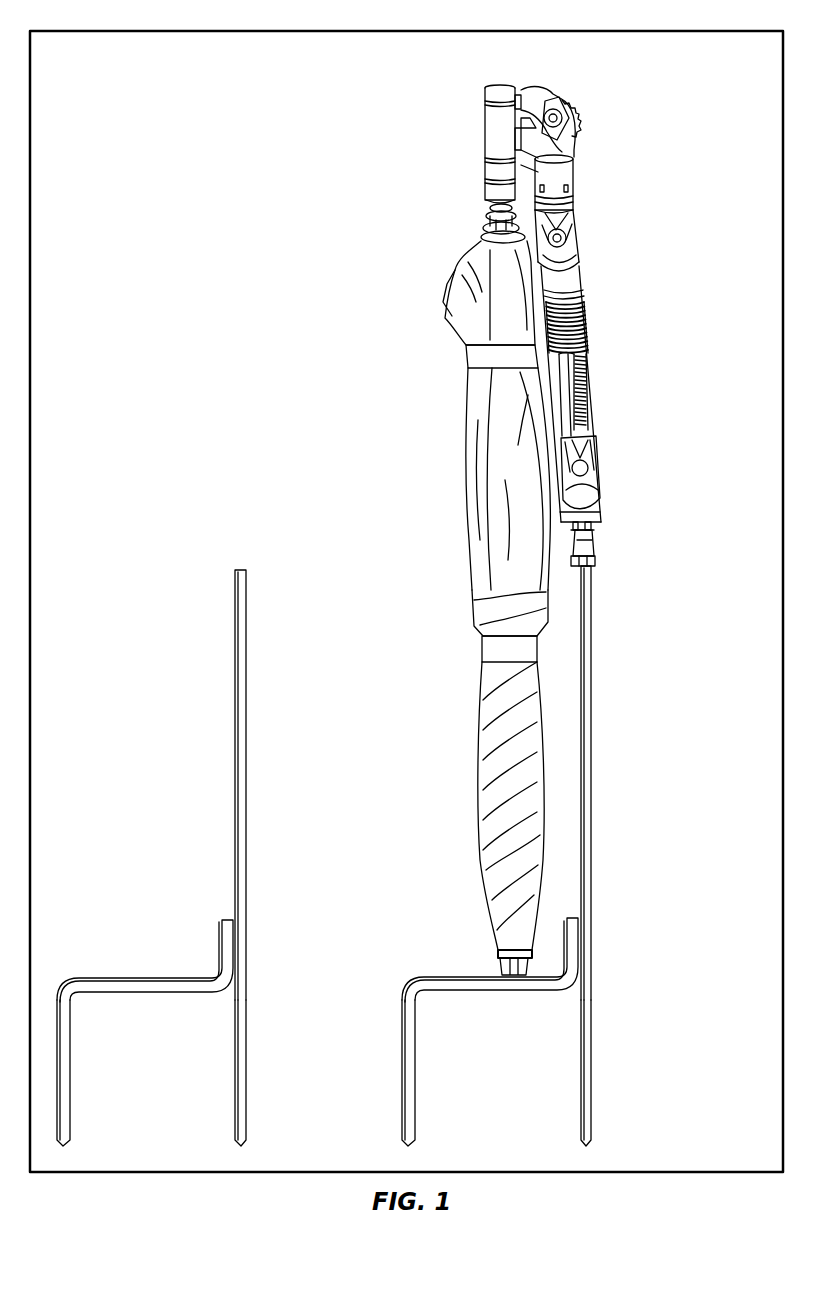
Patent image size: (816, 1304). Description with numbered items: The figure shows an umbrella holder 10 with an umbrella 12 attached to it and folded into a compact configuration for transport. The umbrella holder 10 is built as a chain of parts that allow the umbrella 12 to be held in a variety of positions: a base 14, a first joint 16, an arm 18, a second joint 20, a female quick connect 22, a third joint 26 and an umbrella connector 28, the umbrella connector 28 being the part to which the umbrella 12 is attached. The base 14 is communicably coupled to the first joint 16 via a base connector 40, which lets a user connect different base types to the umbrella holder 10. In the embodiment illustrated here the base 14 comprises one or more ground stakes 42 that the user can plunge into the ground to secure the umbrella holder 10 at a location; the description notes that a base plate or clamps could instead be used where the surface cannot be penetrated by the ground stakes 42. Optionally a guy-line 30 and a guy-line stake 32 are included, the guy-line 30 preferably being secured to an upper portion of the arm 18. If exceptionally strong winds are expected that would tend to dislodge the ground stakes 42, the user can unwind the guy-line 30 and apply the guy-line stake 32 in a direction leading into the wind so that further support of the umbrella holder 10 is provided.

The umbrella holder 10 is at (688, 204).
The umbrella 12 is at (482, 418).
The base 14 is at (272, 756).
The first joint 16 is at (599, 470).
The arm 18 is at (572, 408).
The second joint 20 is at (582, 230).
The female quick connect 22 is at (572, 182).
The third joint 26 is at (581, 118).
The umbrella connector 28 is at (521, 92).
The guy-line 30 is at (592, 349).
The guy-line stake 32 is at (583, 380).
The base connector 40 is at (597, 564).
The ground stakes 42 is at (71, 1093).